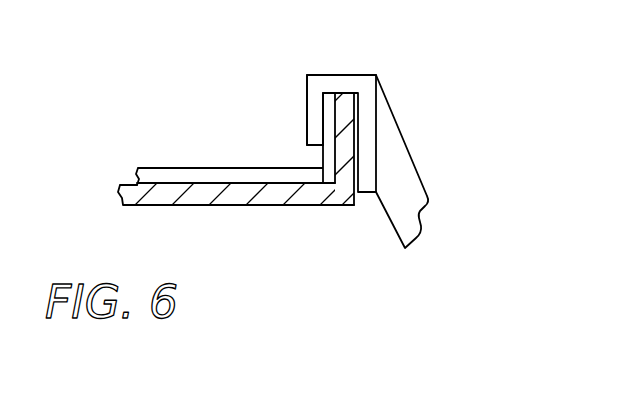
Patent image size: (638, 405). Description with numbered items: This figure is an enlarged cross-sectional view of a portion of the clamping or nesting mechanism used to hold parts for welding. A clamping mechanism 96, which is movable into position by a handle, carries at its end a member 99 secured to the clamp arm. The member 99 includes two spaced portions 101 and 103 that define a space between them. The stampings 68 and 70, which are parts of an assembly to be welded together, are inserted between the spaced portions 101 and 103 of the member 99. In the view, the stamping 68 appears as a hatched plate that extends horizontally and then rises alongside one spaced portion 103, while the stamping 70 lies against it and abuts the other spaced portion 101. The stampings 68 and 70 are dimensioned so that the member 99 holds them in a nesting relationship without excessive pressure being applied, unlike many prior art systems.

The member 99 is at (316, 101).
The spaced portion 101 is at (315, 117).
The spaced portion 103 is at (361, 102).
The clamping mechanism 96 is at (403, 163).
The stamping 70 is at (213, 176).
The stamping 68 is at (322, 197).